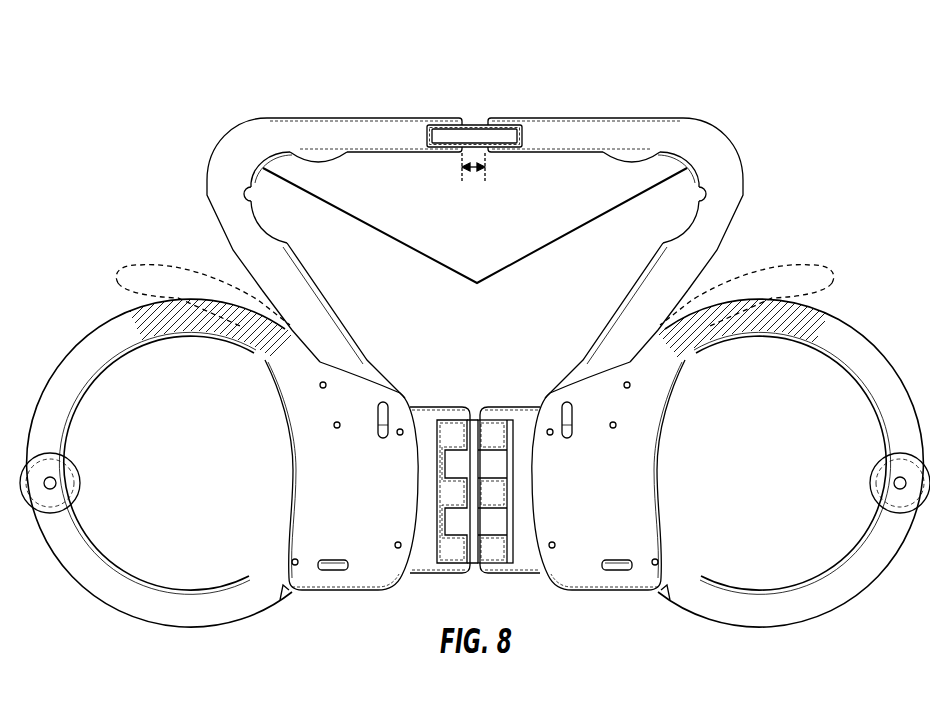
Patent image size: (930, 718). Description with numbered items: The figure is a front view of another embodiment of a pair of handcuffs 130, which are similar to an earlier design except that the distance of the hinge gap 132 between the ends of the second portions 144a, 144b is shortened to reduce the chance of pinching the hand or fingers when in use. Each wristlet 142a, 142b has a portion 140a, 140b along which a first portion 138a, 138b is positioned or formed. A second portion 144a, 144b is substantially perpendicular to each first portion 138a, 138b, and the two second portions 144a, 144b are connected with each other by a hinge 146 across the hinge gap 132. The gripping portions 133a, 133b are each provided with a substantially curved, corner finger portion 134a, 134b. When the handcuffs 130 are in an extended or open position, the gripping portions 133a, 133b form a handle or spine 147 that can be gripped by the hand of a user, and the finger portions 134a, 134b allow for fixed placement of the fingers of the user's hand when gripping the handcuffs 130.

The pair of handcuffs 130 is at (690, 77).
The hinge gap 132 is at (478, 180).
The gripping portion 133a is at (230, 160).
The gripping portion 133b is at (730, 215).
The corner finger portion 134a is at (246, 200).
The corner finger portion 134b is at (708, 192).
The first portion 138a is at (318, 322).
The first portion 138b is at (635, 322).
The portion of wristlet 140a is at (245, 353).
The portion of wristlet 140b is at (663, 357).
The wristlet 142a is at (148, 603).
The wristlet 142b is at (790, 603).
The second portion 144a is at (337, 130).
The second portion 144b is at (715, 150).
The hinge 146 is at (474, 128).
The handle or spine 147 is at (475, 241).